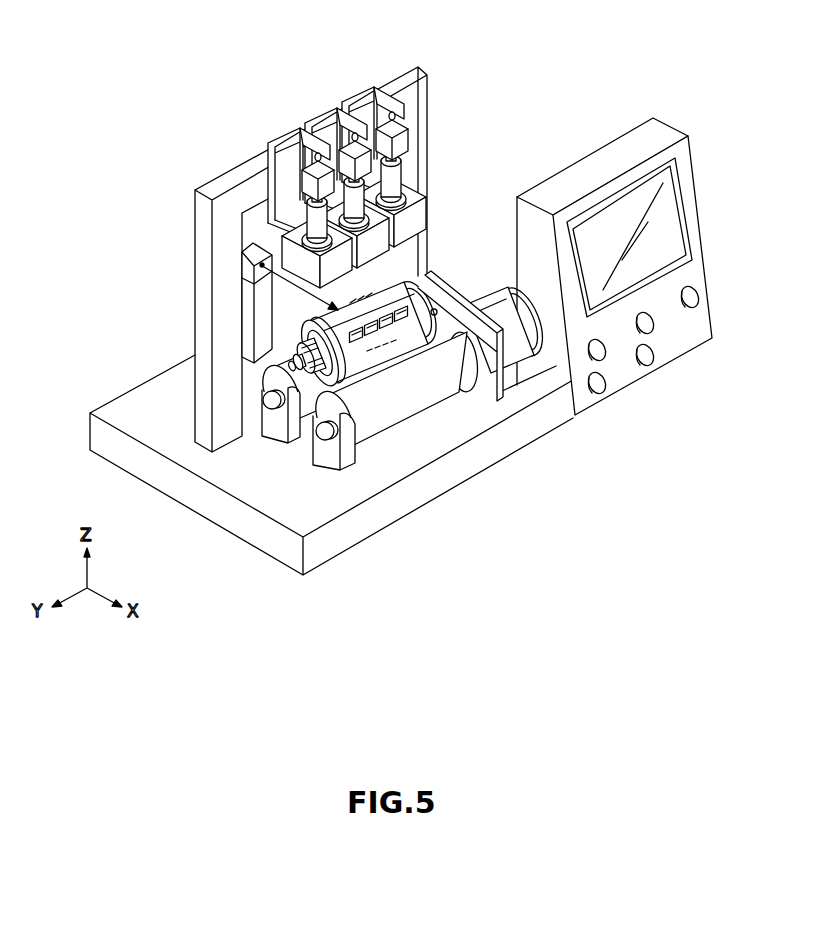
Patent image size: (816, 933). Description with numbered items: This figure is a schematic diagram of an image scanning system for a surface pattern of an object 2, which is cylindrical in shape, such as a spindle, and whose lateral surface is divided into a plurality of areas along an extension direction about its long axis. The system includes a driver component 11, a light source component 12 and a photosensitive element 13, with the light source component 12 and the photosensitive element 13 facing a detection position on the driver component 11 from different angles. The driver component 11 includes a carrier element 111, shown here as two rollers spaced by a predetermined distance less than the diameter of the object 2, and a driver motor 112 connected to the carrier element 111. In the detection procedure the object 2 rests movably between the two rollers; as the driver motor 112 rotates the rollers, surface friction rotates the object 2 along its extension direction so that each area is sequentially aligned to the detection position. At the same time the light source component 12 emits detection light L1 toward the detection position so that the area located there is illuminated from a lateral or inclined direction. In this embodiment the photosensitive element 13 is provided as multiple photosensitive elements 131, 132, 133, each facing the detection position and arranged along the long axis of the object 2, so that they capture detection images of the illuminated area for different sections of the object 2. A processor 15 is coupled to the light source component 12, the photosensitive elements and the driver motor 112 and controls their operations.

The object 2 is at (376, 356).
The driver component 11 is at (551, 489).
The carrier element 111 is at (433, 388).
The driver motor 112 is at (513, 352).
The light source component 12 is at (249, 251).
The detection light L1 is at (282, 281).
The photosensitive element 13 is at (388, 4).
The photosensitive element 131 is at (312, 184).
The photosensitive element 132 is at (362, 152).
The photosensitive element 133 is at (390, 136).
The processor 15 is at (620, 368).